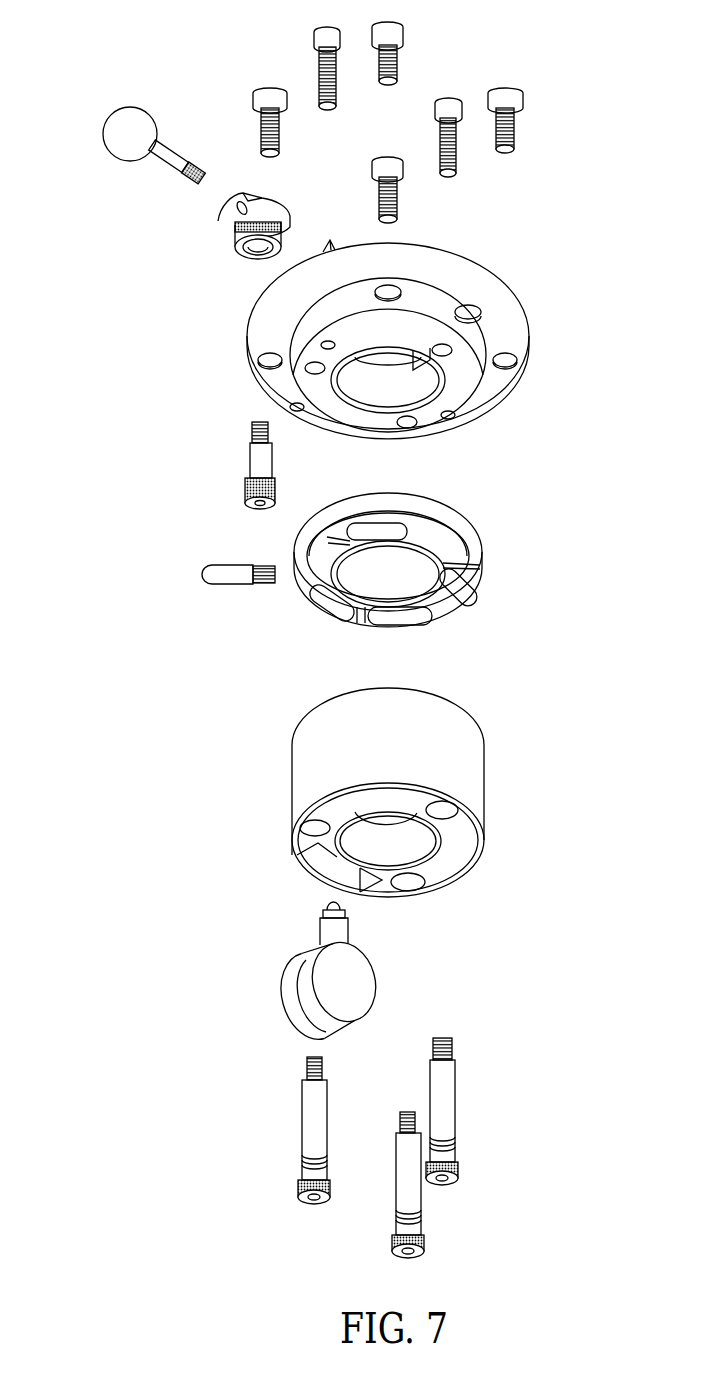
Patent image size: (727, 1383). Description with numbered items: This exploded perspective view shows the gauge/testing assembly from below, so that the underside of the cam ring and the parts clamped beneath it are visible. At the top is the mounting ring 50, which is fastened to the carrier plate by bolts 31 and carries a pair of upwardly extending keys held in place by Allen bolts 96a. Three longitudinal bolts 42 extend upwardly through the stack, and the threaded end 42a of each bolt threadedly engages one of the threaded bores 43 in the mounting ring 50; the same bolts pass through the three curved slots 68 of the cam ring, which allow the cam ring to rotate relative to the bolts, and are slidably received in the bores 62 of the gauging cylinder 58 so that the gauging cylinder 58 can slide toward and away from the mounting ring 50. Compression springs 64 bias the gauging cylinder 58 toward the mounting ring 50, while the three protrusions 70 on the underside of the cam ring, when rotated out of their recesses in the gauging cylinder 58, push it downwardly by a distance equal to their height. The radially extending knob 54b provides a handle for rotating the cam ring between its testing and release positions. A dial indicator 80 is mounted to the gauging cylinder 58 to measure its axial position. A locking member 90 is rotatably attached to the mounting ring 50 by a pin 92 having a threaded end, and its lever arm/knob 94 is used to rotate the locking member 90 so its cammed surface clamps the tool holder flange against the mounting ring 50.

The bolts 31 is at (404, 66).
The Allen bolts 96a is at (319, 66).
The lever arm/knob 94 is at (103, 133).
The locking member 90 is at (219, 218).
The mounting ring 50 is at (378, 357).
The threaded bores 43 is at (312, 372).
The pin 92 is at (250, 462).
The protrusions 70 is at (337, 540).
The curved slots 68 is at (325, 598).
The radially extending knob 54b is at (204, 574).
The gauging cylinder 58 is at (426, 816).
The bores 62 is at (444, 812).
The dial indicator 80 is at (360, 990).
The longitudinal bolts 42 is at (375, 1139).
The threaded end of bolt 42a is at (307, 1060).
The compression springs 64 is at (302, 1163).